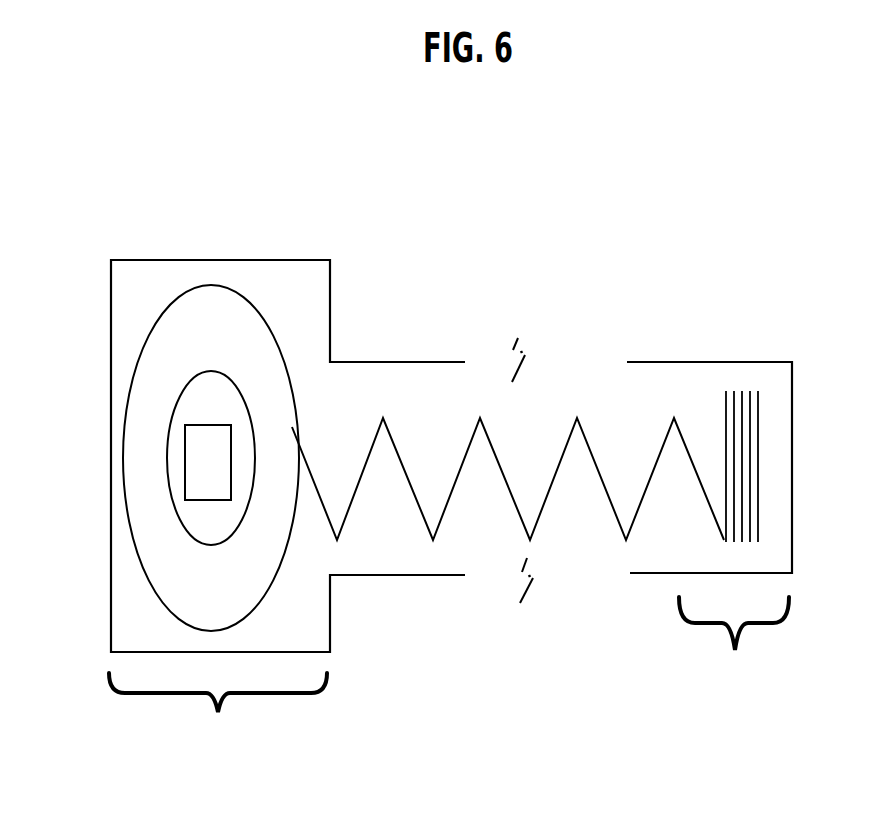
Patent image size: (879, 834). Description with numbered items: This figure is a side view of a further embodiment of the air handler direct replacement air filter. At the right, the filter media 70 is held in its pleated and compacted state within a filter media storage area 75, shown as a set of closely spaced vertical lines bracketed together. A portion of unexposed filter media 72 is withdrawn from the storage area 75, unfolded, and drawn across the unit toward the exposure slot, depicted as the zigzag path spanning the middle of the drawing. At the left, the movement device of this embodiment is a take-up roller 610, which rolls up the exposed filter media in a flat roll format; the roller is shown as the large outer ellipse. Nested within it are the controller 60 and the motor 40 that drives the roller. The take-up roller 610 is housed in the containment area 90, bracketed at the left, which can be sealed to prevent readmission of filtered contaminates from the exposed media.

The take-up roller 610 is at (172, 347).
The controller 60 is at (194, 443).
The motor 40 is at (224, 398).
The filter media 70 is at (440, 448).
The unexposed filter media 72 is at (739, 367).
The filter media storage area 75 is at (709, 562).
The containment area 90 is at (287, 533).